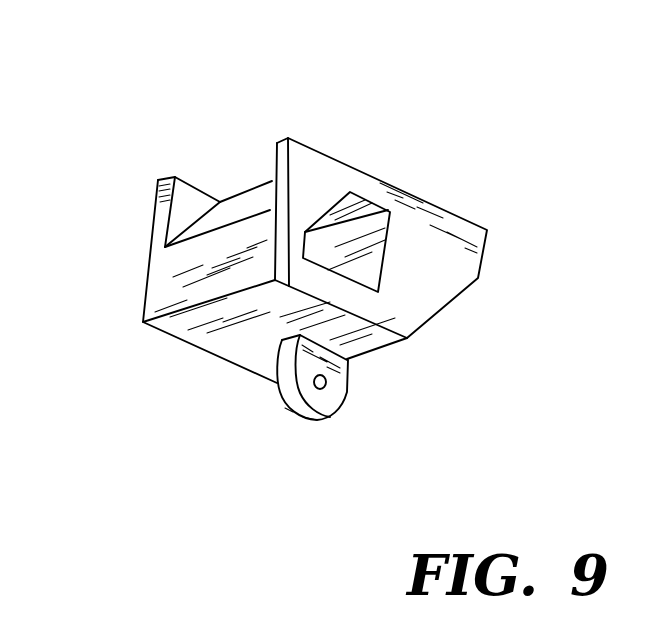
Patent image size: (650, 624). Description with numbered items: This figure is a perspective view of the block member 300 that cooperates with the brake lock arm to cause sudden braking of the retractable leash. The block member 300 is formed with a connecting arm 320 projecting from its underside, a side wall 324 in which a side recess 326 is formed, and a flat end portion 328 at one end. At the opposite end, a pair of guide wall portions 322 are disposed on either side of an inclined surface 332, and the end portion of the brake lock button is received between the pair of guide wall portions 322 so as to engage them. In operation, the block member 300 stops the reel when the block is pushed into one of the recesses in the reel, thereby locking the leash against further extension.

The block member 300 is at (315, 249).
The connecting arm 320 is at (293, 413).
The guide wall portions 322 is at (190, 192).
The side wall 324 is at (442, 220).
The side recess 326 is at (360, 263).
The flat end portion 328 is at (493, 248).
The inclined surface 332 is at (217, 218).